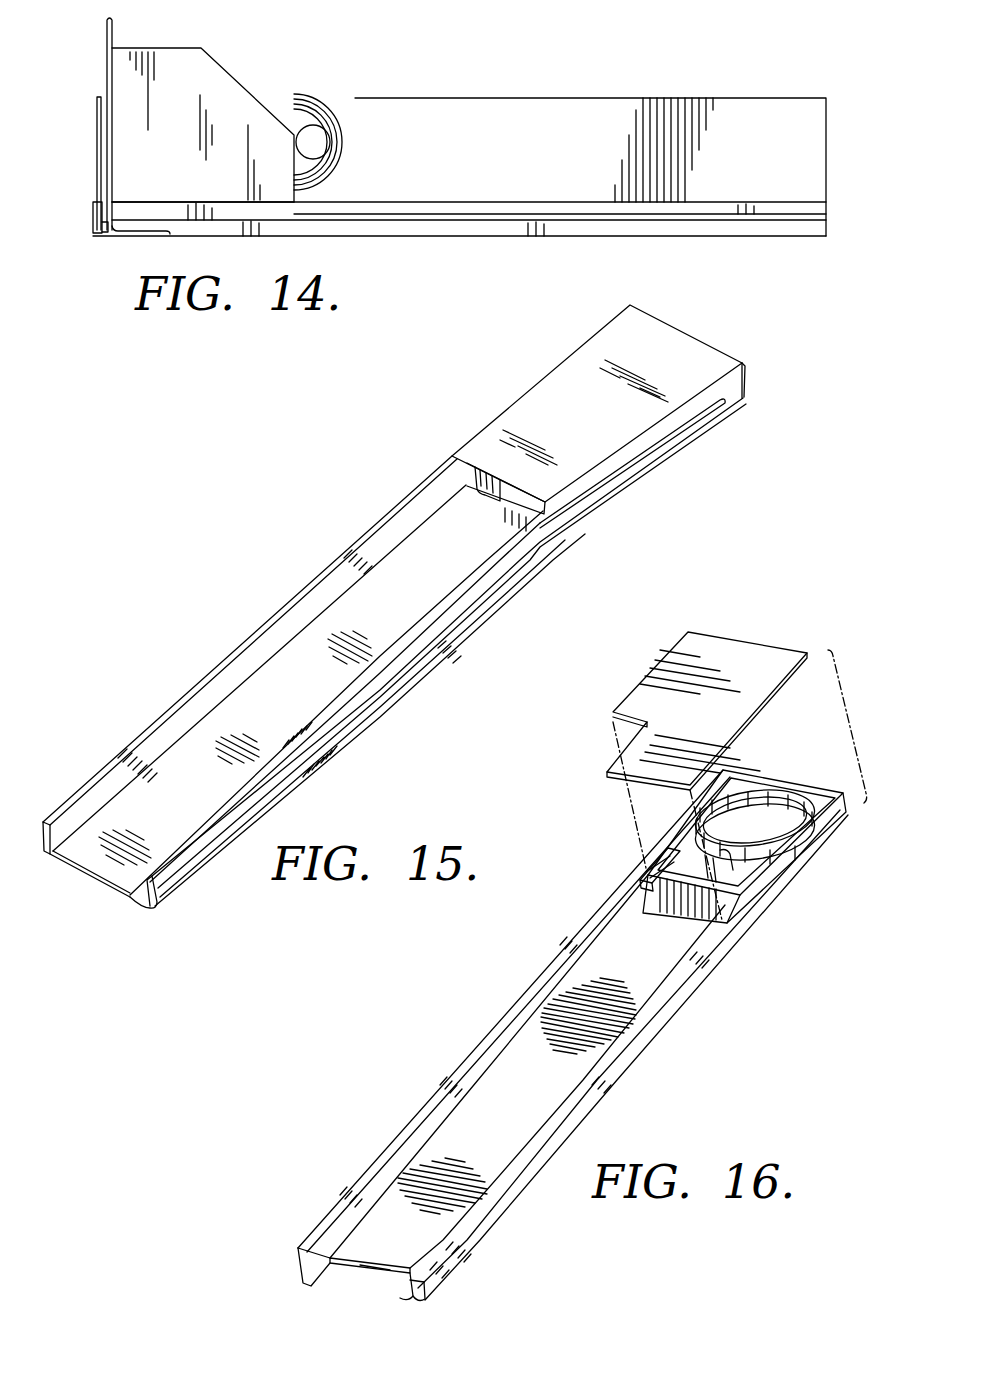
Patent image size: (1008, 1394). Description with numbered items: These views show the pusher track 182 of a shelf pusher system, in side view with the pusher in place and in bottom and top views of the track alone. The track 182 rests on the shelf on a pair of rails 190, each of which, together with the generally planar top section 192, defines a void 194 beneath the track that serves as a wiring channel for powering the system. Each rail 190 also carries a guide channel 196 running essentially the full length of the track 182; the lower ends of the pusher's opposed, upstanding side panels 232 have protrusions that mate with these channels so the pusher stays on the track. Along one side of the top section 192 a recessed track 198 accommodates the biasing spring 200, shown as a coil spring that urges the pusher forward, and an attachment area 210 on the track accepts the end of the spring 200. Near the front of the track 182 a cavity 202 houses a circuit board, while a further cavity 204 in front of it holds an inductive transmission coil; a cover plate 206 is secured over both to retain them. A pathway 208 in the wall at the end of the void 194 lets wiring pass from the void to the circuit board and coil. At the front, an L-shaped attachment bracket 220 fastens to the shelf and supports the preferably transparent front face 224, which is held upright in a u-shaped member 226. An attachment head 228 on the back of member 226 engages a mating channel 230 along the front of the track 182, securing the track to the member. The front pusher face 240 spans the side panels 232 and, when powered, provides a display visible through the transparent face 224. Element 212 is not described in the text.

In FIG. 15, the pusher track 182 is at (700, 333).
In FIG. 16, the pusher track 182 is at (628, 1068).
In FIG. 15, the rail 190 is at (100, 768).
In FIG. 16, the rail 190 is at (318, 1275).
In FIG. 15, the top section 192 is at (112, 890).
In FIG. 16, the top section 192 is at (497, 1093).
In FIG. 16, the void 194 is at (374, 1272).
In FIG. 15, the guide channel 196 is at (182, 885).
In FIG. 16, the guide channel 196 is at (515, 1190).
In FIG. 16, the recessed track 198 is at (368, 1198).
In FIG. 14, the biasing spring 200 is at (312, 95).
In FIG. 16, the cavity 202 is at (755, 882).
In FIG. 16, the cavity 204 is at (757, 792).
In FIG. 16, the cover plate 206 is at (735, 638).
In FIG. 15, the pathway 208 is at (470, 482).
In FIG. 14, the attachment area 210 is at (797, 98).
In FIG. 15, the attachment area 210 is at (597, 492).
In FIG. 16, the attachment area 210 is at (648, 870).
In FIG. 14, the base strip 212 is at (826, 212).
In FIG. 14, the attachment bracket 220 is at (158, 233).
In FIG. 14, the front face 224 is at (98, 108).
In FIG. 14, the u-shaped member 226 is at (97, 218).
In FIG. 14, the attachment head 228 is at (103, 233).
In FIG. 15, the mating channel 230 is at (748, 385).
In FIG. 16, the mating channel 230 is at (864, 803).
In FIG. 14, the side panel 232 is at (183, 48).
In FIG. 14, the front pusher face 240 is at (106, 48).